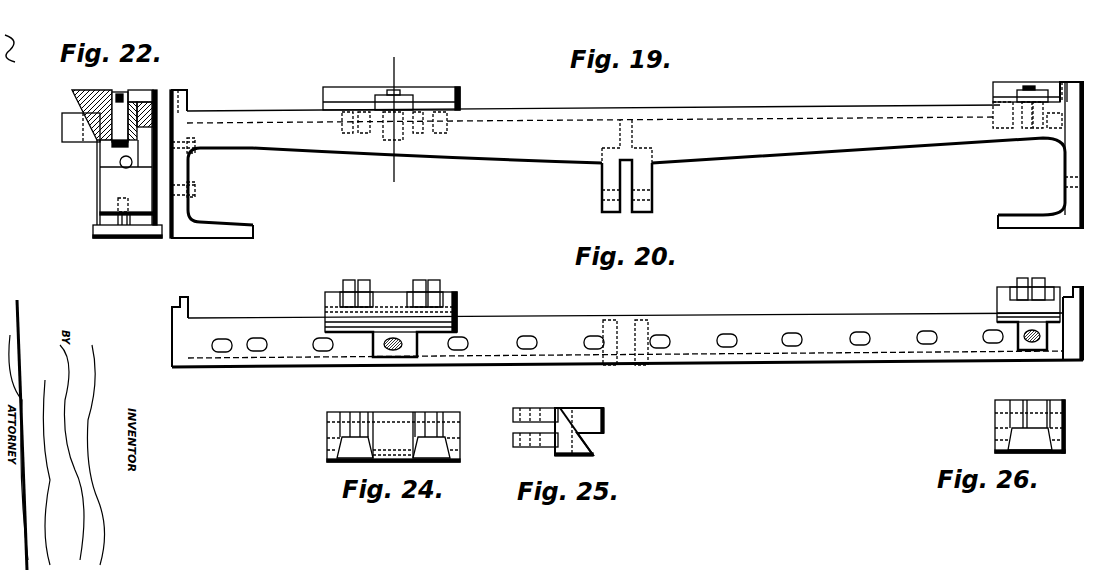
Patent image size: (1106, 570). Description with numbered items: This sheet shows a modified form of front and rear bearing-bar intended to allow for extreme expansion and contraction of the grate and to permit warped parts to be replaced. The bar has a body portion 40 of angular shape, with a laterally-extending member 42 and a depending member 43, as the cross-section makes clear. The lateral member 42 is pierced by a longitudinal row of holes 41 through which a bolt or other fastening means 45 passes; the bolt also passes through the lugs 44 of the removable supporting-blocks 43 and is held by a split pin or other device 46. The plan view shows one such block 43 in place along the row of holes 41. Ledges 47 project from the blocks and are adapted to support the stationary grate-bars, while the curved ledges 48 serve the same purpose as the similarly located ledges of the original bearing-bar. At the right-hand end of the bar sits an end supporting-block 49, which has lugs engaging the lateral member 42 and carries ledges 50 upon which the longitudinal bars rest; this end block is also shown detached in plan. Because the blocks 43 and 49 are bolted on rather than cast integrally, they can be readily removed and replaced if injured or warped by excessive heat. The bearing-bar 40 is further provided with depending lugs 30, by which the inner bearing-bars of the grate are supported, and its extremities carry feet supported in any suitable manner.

In FIG. 22, the depending lugs 30 is at (121, 156).
In FIG. 20, the depending lugs 30 is at (640, 320).
In FIG. 22, the body portion of the end bearing-bar 40 is at (127, 242).
In FIG. 19, the body portion of the end bearing-bar 40 is at (593, 109).
In FIG. 20, the body portion of the end bearing-bar 40 is at (627, 332).
In FIG. 20, the holes 41 is at (462, 351).
In FIG. 22, the laterally-extending member 42 is at (97, 142).
In FIG. 20, the laterally-extending member 42 is at (273, 326).
In FIG. 22, the depending member / removable supporting-block 43 is at (158, 162).
In FIG. 19, the depending member / removable supporting-block 43 is at (626, 147).
In FIG. 20, the depending member / removable supporting-block 43 is at (391, 313).
In FIG. 24, the depending member / removable supporting-block 43 is at (373, 437).
In FIG. 25, the depending member / removable supporting-block 43 is at (592, 432).
In FIG. 22, the lugs 44 is at (122, 117).
In FIG. 25, the lugs 44 is at (540, 410).
In FIG. 22, the bolt or other fastening means 45 is at (137, 102).
In FIG. 19, the bolt or other fastening means 45 is at (395, 95).
In FIG. 20, the bolt or other fastening means 45 is at (396, 350).
In FIG. 20, the split pin or other device 46 is at (385, 346).
In FIG. 22, the ledges 47 is at (62, 127).
In FIG. 20, the ledges 47 is at (363, 280).
In FIG. 24, the ledges 47 is at (355, 412).
In FIG. 25, the ledges 47 is at (592, 415).
In FIG. 22, the curved ledges 48 is at (72, 99).
In FIG. 20, the curved ledges 48 is at (400, 292).
In FIG. 25, the curved ledges 48 is at (594, 453).
In FIG. 19, the end supporting-block 49 is at (1003, 86).
In FIG. 20, the end supporting-block 49 is at (1000, 293).
In FIG. 26, the end supporting-block 49 is at (1022, 419).
In FIG. 20, the ledges 50 is at (1040, 278).
In FIG. 26, the ledges 50 is at (1038, 408).